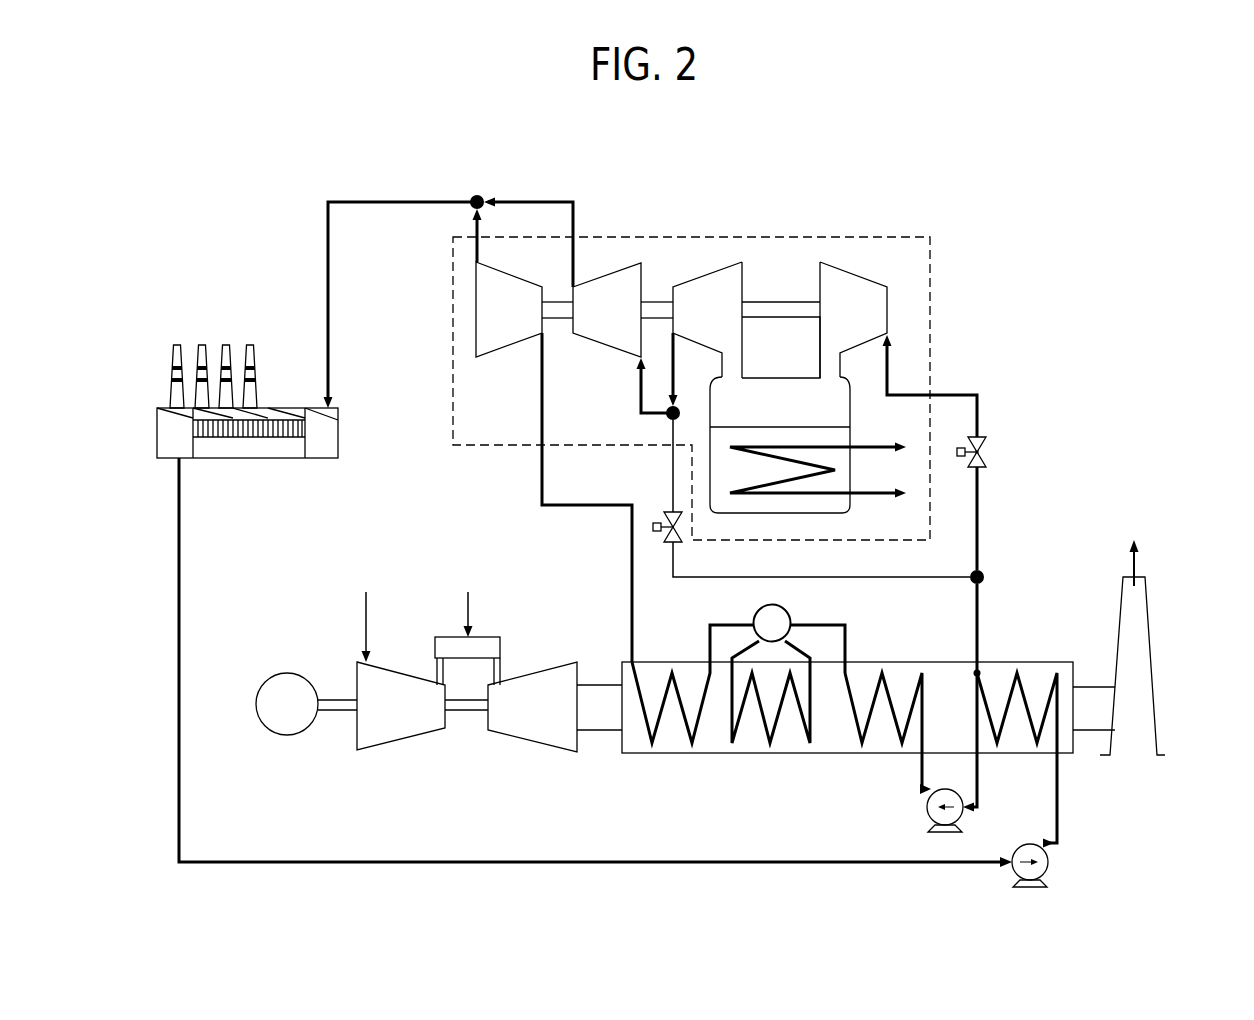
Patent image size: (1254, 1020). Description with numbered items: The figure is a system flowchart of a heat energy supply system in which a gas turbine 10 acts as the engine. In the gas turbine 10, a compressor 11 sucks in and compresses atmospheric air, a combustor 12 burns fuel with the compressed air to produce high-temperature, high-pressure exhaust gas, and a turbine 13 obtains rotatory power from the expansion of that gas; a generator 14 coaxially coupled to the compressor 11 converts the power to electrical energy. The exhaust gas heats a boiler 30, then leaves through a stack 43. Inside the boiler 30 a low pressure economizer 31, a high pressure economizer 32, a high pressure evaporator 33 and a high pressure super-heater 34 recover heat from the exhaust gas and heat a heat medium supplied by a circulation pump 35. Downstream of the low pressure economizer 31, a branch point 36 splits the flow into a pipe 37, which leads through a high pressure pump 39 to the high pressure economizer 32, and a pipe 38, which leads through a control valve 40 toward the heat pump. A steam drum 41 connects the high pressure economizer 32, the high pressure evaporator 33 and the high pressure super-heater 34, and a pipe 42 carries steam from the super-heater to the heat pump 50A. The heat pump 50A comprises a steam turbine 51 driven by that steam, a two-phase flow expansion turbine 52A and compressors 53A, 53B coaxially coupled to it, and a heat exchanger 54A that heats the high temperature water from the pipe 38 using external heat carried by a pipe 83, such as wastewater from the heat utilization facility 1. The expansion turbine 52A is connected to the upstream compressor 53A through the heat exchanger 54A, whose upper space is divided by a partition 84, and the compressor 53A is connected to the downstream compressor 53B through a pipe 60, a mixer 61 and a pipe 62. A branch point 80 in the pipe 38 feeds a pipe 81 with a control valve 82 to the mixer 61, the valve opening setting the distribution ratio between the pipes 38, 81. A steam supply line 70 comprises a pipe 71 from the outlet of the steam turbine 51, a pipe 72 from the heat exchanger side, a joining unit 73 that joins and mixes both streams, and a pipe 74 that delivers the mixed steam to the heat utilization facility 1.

The heat utilization facility 1 is at (298, 408).
The gas turbine 10 is at (467, 700).
The compressor 11 is at (411, 720).
The combustor 12 is at (493, 637).
The turbine 13 is at (548, 720).
The generator 14 is at (290, 673).
The boiler 30 is at (853, 720).
The low pressure economizer 31 is at (1015, 672).
The high pressure economizer 32 is at (856, 755).
The high pressure evaporator 33 is at (768, 755).
The high pressure super-heater 34 is at (648, 755).
The circulation pump 35 is at (1049, 860).
The branch point 36 is at (975, 672).
The pipe 37 is at (979, 778).
The pipe 38 is at (980, 508).
The high pressure pump 39 is at (928, 814).
The control valve 40 is at (988, 450).
The steam drum 41 is at (757, 615).
The pipe 42 is at (632, 602).
The stack 43 is at (1152, 613).
The heat pump 50A is at (691, 351).
The steam turbine 51 is at (514, 327).
The two-phase flow expansion turbine 52A is at (874, 327).
The compressor 53A is at (726, 327).
The compressor 53B is at (628, 327).
The heat exchanger 54A is at (850, 413).
The pipe 60 is at (676, 378).
The mixer 61 is at (665, 425).
The pipe 62 is at (640, 385).
The steam supply line 70 is at (450, 257).
The pipe 71 is at (476, 250).
The pipe 72 is at (573, 200).
The joining unit 73 is at (477, 195).
The pipe 74 is at (393, 202).
The branch point 80 is at (985, 577).
The pipe 81 is at (954, 576).
The control valve 82 is at (660, 512).
The pipe 83 is at (878, 494).
The partition 84 is at (780, 396).